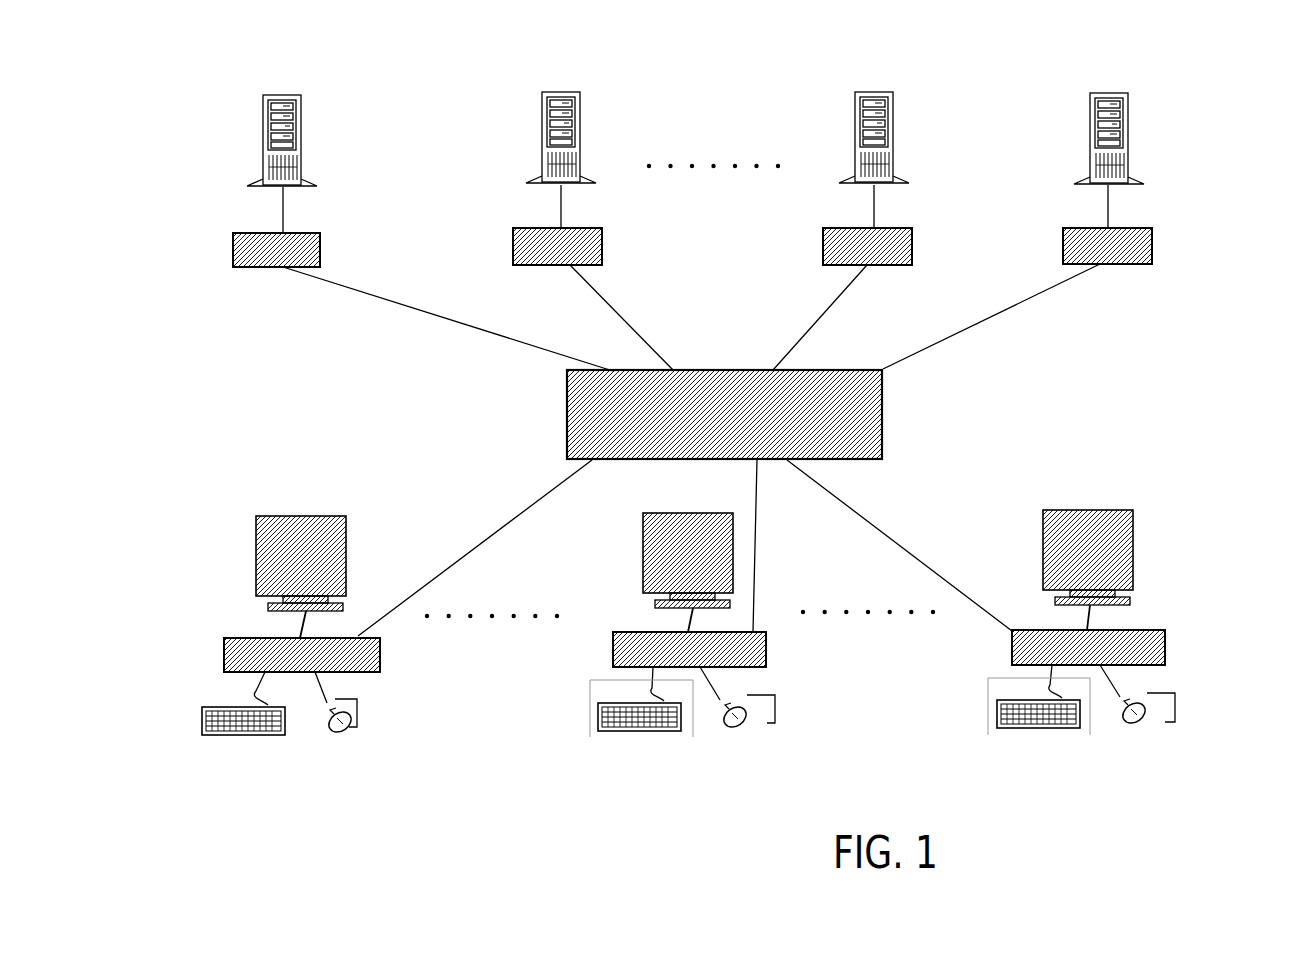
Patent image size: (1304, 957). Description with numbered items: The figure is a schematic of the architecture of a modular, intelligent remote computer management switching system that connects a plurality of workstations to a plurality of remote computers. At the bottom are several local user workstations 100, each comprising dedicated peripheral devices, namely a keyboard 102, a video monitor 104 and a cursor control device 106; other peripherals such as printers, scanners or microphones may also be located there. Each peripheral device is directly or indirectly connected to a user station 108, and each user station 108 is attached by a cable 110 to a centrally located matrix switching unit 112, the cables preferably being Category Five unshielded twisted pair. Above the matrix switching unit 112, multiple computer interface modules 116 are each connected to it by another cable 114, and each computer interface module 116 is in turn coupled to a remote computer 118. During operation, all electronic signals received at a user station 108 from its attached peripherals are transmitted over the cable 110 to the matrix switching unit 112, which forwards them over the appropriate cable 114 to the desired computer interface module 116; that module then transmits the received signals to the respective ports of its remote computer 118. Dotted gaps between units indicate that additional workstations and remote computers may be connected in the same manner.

The local user workstation 100 is at (183, 803).
The keyboard 102 is at (621, 701).
The video monitor 104 is at (694, 560).
The cursor control device 106 is at (740, 715).
The user station 108 is at (694, 651).
The cable 110 is at (685, 548).
The matrix switching unit 112 is at (724, 414).
The cable 114 is at (691, 317).
The computer interface module 116 is at (692, 247).
The remote computer 118 is at (695, 122).